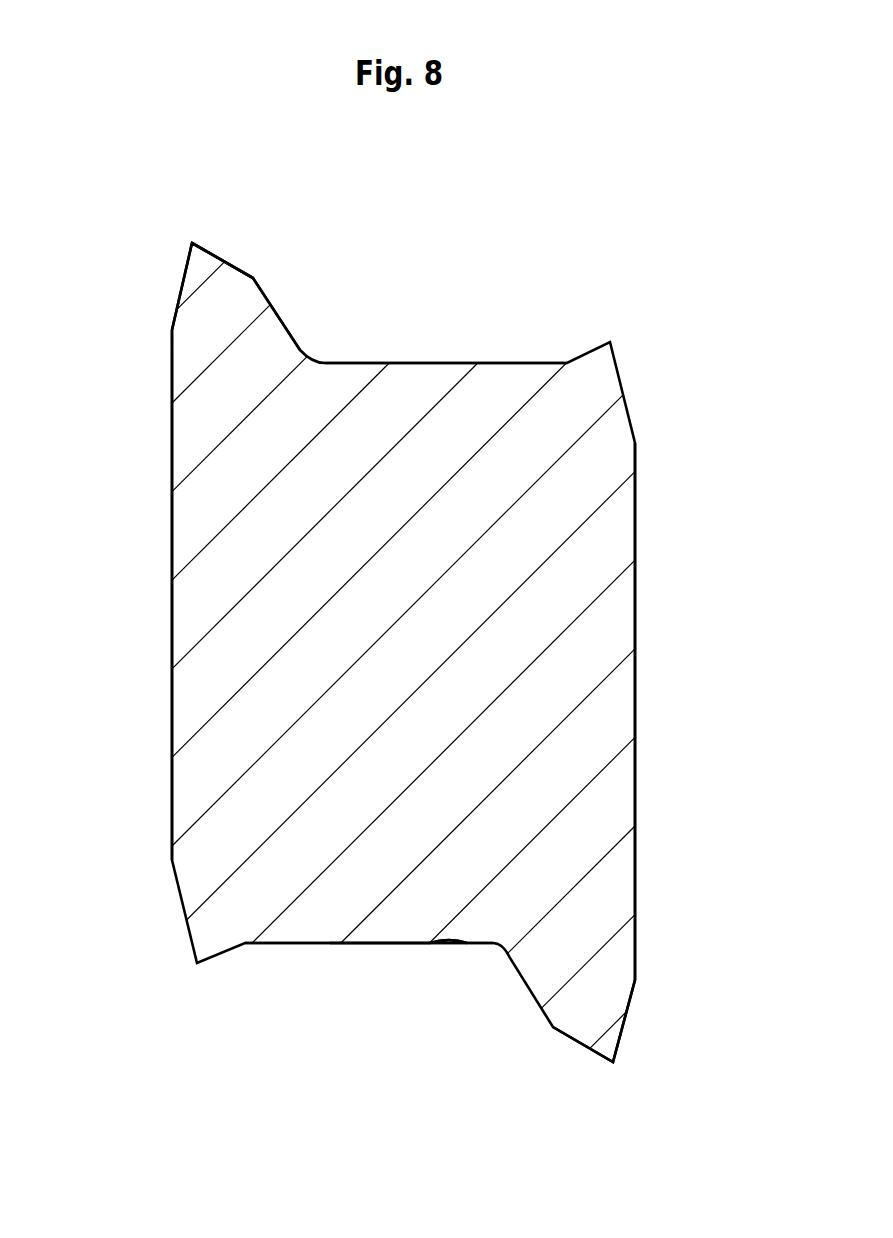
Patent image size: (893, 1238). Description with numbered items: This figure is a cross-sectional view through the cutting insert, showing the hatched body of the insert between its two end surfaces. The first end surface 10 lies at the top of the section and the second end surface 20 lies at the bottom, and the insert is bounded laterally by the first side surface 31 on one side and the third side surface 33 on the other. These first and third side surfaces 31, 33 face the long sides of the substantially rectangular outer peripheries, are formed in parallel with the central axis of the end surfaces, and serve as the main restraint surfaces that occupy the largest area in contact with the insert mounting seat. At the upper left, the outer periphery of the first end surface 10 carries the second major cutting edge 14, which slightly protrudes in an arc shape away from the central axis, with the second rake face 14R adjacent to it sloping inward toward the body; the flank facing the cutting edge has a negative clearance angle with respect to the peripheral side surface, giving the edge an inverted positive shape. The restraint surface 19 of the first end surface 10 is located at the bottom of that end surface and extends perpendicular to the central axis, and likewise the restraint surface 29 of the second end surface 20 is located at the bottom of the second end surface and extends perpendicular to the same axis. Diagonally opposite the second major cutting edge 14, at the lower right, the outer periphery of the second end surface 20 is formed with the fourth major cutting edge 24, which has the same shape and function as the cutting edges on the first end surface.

The first end surface 10 is at (497, 354).
The second major cutting edge 14 is at (192, 242).
The second rake face 14R is at (217, 253).
The restraint surface 19 is at (405, 362).
The second end surface 20 is at (293, 950).
The fourth major cutting edge 24 is at (613, 1065).
The restraint surface 29 is at (342, 945).
The first side surface 31 is at (635, 642).
The third side surface 33 is at (172, 640).